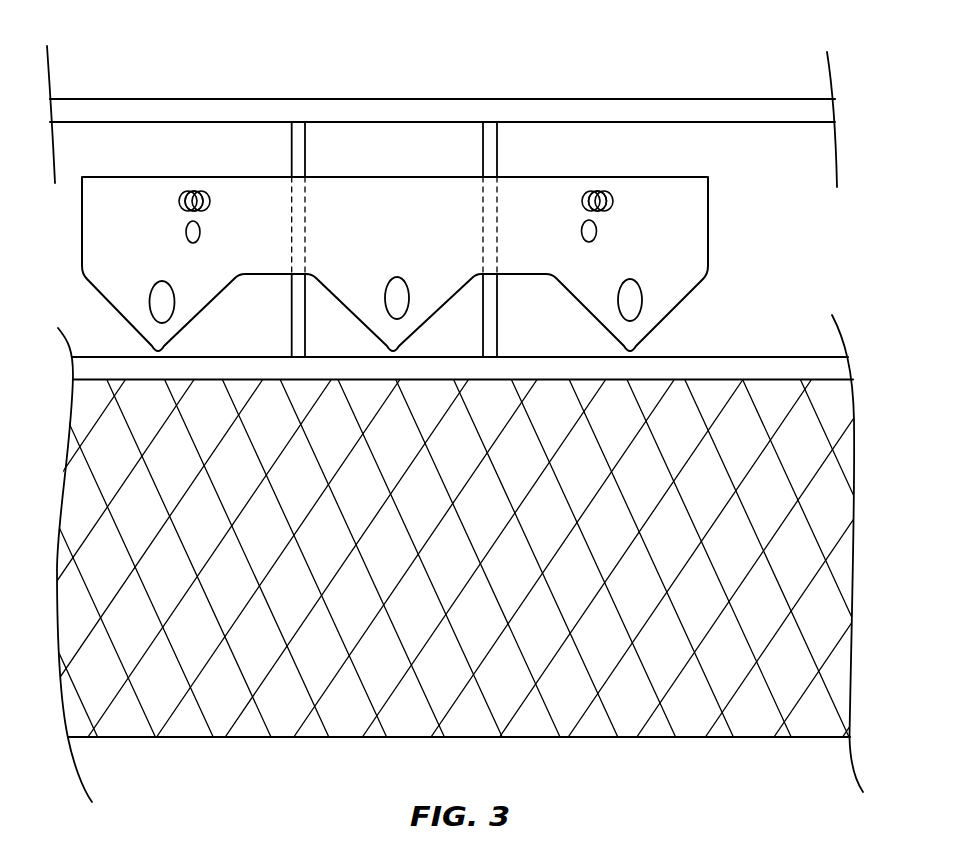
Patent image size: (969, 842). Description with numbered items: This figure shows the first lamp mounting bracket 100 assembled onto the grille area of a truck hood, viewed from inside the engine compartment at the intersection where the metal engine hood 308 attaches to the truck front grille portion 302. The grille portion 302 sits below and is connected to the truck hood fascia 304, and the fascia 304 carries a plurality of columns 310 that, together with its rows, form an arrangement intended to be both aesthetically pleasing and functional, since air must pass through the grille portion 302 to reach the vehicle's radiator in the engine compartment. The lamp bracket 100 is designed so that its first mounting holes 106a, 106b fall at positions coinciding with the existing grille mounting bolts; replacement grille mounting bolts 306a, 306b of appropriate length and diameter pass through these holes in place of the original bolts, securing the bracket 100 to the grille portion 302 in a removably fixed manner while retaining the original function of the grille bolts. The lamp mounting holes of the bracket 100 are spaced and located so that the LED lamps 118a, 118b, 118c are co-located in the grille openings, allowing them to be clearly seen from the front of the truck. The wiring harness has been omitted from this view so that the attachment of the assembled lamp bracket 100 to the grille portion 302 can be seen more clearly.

The lamp mounting bracket 100 is at (709, 185).
The first mounting hole 106a is at (180, 201).
The first mounting hole 106b is at (598, 206).
The LED lamp 118a is at (155, 283).
The LED lamp 118b is at (401, 279).
The LED lamp 118c is at (638, 279).
The grille portion 302 is at (815, 458).
The fascia 304 is at (760, 357).
The grille mounting bolt 306a is at (198, 191).
The grille mounting bolt 306b is at (598, 197).
The metal engine hood 308 is at (348, 99).
The column 310 is at (306, 149).